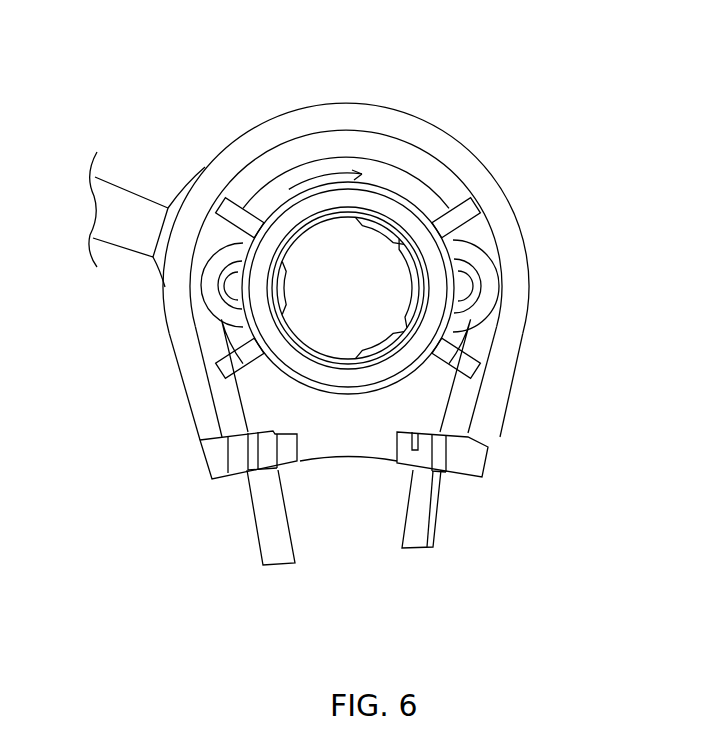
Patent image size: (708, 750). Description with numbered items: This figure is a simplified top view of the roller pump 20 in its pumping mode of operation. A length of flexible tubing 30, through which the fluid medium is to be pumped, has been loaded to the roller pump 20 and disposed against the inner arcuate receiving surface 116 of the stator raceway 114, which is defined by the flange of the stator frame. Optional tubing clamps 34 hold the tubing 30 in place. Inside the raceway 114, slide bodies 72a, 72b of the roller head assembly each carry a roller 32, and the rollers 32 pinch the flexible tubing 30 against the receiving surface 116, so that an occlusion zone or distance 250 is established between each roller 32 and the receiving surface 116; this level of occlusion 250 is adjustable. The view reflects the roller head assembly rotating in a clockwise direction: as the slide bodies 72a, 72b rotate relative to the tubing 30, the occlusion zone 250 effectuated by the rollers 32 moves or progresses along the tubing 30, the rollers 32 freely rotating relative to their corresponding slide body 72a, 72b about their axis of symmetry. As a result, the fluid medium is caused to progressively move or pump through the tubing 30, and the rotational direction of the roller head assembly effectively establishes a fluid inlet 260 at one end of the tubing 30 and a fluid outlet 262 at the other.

The roller pump 20 is at (372, 64).
The flexible tubing 30 is at (331, 534).
The roller 32 is at (200, 286).
The tubing clamp 34 is at (237, 455).
The slide body 72a is at (467, 263).
The slide body 72b is at (230, 252).
The raceway 114 is at (392, 175).
The inner arcuate receiving surface 116 is at (447, 165).
The occlusion zone 250 is at (160, 270).
The fluid inlet 260 is at (277, 568).
The fluid outlet 262 is at (413, 553).